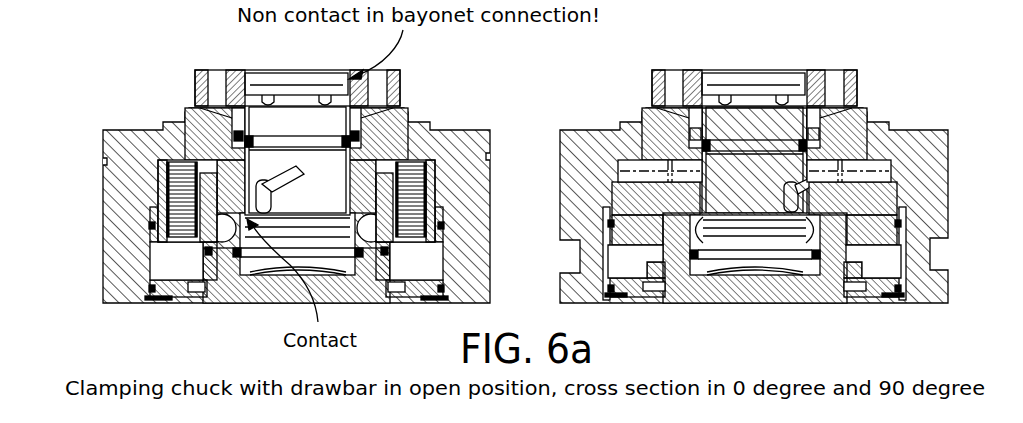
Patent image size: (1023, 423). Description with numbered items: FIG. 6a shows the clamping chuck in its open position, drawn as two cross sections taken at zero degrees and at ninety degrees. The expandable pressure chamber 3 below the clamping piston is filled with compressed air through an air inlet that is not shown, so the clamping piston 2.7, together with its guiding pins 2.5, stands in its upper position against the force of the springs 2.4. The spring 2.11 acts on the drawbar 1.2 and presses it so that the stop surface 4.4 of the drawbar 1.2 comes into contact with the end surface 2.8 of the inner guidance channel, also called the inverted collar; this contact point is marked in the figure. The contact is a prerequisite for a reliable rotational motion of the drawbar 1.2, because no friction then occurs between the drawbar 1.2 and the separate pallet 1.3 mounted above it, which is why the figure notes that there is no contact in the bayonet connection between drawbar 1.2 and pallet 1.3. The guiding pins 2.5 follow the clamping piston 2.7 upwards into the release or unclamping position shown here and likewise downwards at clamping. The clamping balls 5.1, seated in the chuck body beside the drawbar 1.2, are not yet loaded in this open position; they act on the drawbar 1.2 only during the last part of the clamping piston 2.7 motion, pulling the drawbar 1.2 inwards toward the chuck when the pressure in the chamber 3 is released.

The drawbar 1.2 is at (260, 122).
The separate pallet 1.3 is at (396, 80).
The spring 2.4 is at (170, 163).
The guiding pins 2.5 is at (637, 167).
The clamping piston 2.7 is at (633, 233).
The end surface of the inner guidance channel 2.8 is at (370, 226).
The spring 2.11 is at (275, 268).
The expandable pressure chamber 3 is at (417, 265).
The stop surface 4.4 is at (276, 207).
The clamping balls 5.1 is at (222, 232).